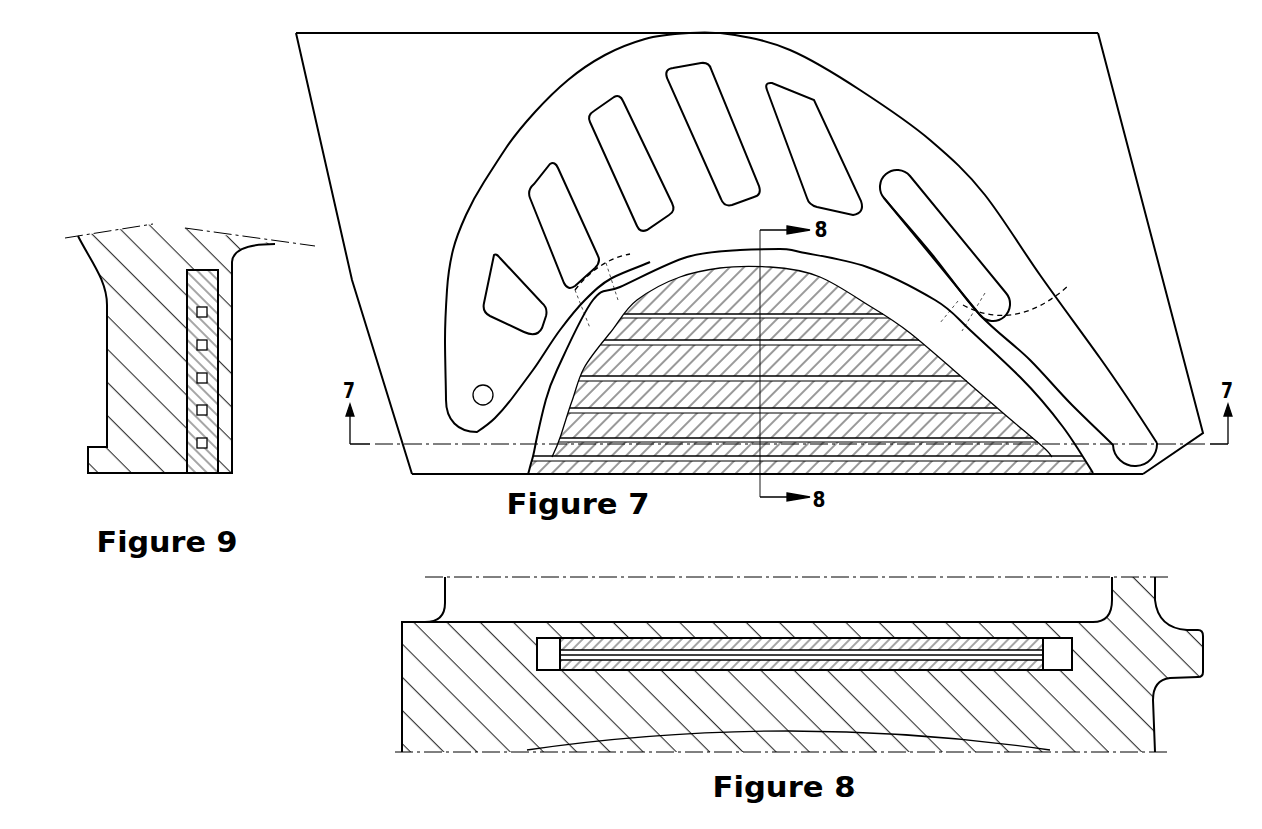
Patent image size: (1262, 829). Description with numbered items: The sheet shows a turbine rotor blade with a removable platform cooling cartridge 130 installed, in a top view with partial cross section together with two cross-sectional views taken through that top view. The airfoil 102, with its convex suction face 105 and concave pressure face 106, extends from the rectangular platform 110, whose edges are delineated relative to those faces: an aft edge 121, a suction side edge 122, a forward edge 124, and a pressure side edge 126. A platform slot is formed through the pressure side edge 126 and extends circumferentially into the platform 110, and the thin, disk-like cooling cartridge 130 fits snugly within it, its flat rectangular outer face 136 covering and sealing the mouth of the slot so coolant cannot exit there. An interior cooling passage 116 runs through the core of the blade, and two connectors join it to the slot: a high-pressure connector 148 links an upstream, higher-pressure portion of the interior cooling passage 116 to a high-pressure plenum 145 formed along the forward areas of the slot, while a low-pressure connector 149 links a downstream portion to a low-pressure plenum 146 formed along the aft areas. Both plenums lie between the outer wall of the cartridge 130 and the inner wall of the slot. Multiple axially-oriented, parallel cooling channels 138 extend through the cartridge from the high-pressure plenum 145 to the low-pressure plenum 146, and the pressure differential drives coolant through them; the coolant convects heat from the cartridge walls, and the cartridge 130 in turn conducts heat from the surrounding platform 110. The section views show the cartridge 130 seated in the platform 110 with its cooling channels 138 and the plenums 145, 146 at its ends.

In FIG. 7, the airfoil 102 is at (682, 61).
In FIG. 8, the airfoil 102 is at (762, 612).
In FIG. 7, the suction face 105 is at (523, 146).
In FIG. 7, the pressure face 106 is at (1005, 343).
In FIG. 8, the platform 110 is at (470, 661).
In FIG. 9, the platform 110 is at (153, 370).
In FIG. 7, the interior cooling passage 116 is at (495, 315).
In FIG. 7, the aft edge 121 is at (1142, 200).
In FIG. 7, the suction side edge 122 is at (804, 33).
In FIG. 7, the forward edge 124 is at (313, 113).
In FIG. 7, the pressure side edge 126 is at (450, 476).
In FIG. 9, the pressure side edge 126 is at (130, 477).
In FIG. 8, the platform cooling cartridge 130 is at (710, 663).
In FIG. 9, the platform cooling cartridge 130 is at (205, 328).
In FIG. 7, the outer face 136 is at (897, 476).
In FIG. 9, the outer face 136 is at (208, 477).
In FIG. 7, the cooling channels 138 is at (690, 478).
In FIG. 8, the cooling channels 138 is at (644, 651).
In FIG. 9, the cooling channels 138 is at (197, 310).
In FIG. 7, the high-pressure plenum 145 is at (578, 396).
In FIG. 8, the high-pressure plenum 145 is at (552, 657).
In FIG. 7, the low-pressure plenum 146 is at (908, 318).
In FIG. 8, the low-pressure plenum 146 is at (1062, 657).
In FIG. 7, the high-pressure connector 148 is at (621, 284).
In FIG. 7, the low-pressure connector 149 is at (1019, 295).